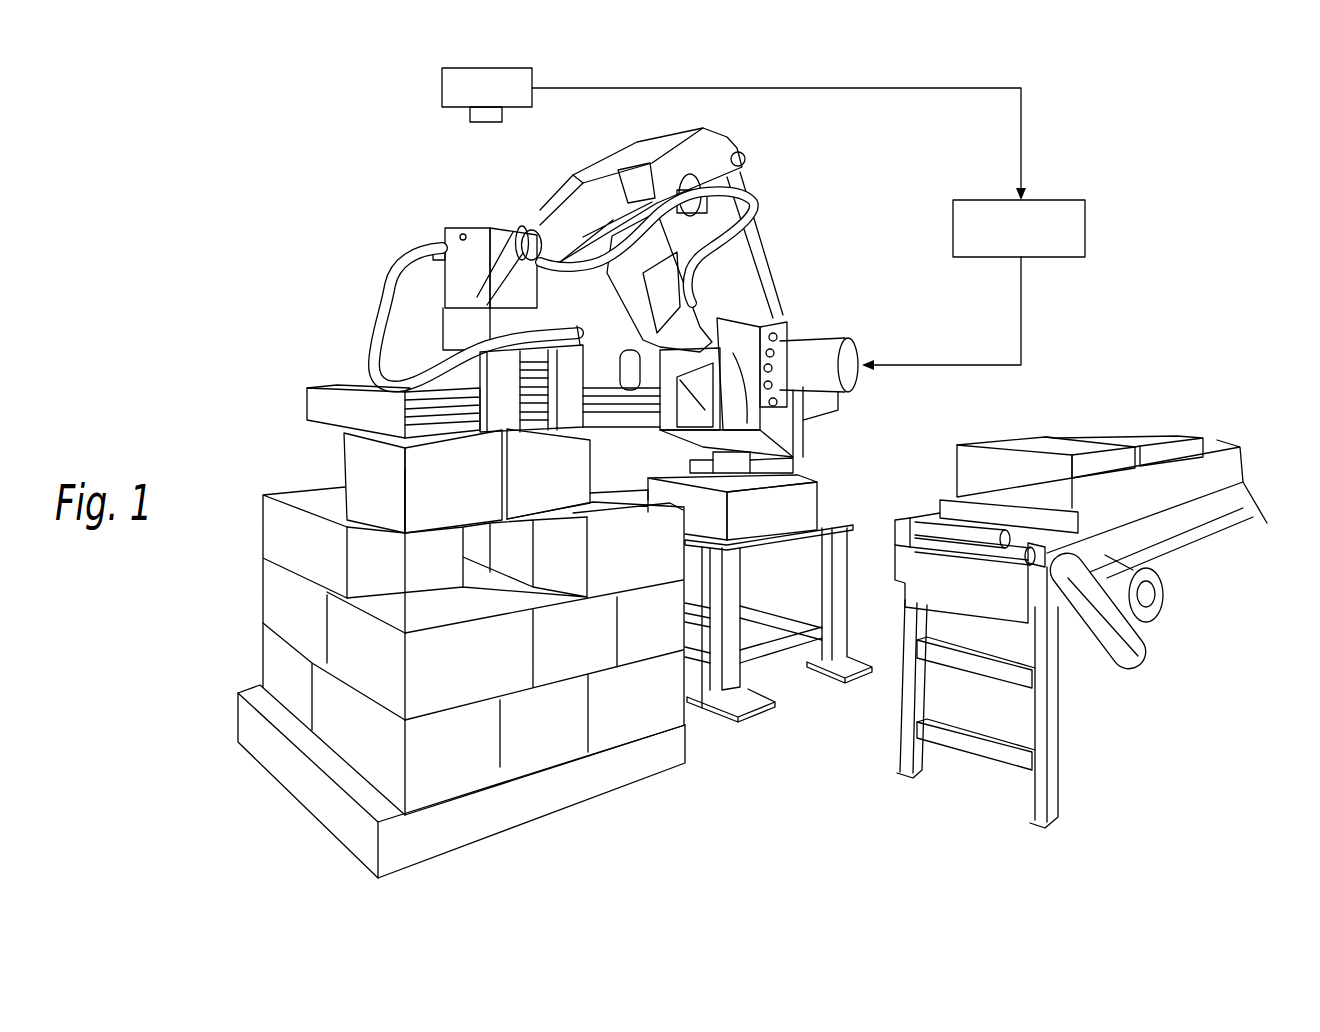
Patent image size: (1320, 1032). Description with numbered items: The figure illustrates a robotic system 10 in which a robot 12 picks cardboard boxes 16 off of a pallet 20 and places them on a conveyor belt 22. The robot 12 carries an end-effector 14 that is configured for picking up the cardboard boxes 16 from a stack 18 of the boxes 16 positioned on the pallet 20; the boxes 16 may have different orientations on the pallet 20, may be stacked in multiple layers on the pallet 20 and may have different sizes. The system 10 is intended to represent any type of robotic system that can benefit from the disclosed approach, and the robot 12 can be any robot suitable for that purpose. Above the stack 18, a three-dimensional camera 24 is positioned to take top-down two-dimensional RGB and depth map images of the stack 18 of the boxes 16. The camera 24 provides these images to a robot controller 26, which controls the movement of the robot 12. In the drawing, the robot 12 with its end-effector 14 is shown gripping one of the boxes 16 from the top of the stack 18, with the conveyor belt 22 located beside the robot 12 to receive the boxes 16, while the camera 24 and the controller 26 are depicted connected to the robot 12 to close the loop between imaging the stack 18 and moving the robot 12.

The robotic system 10 is at (1138, 105).
The robot 12 is at (790, 235).
The end-effector 14 is at (317, 400).
The cardboard boxes 16 is at (360, 453).
The stack 18 is at (232, 586).
The pallet 20 is at (580, 787).
The conveyor belt 22 is at (1185, 522).
The 3D camera 24 is at (442, 87).
The robot controller 26 is at (1087, 228).